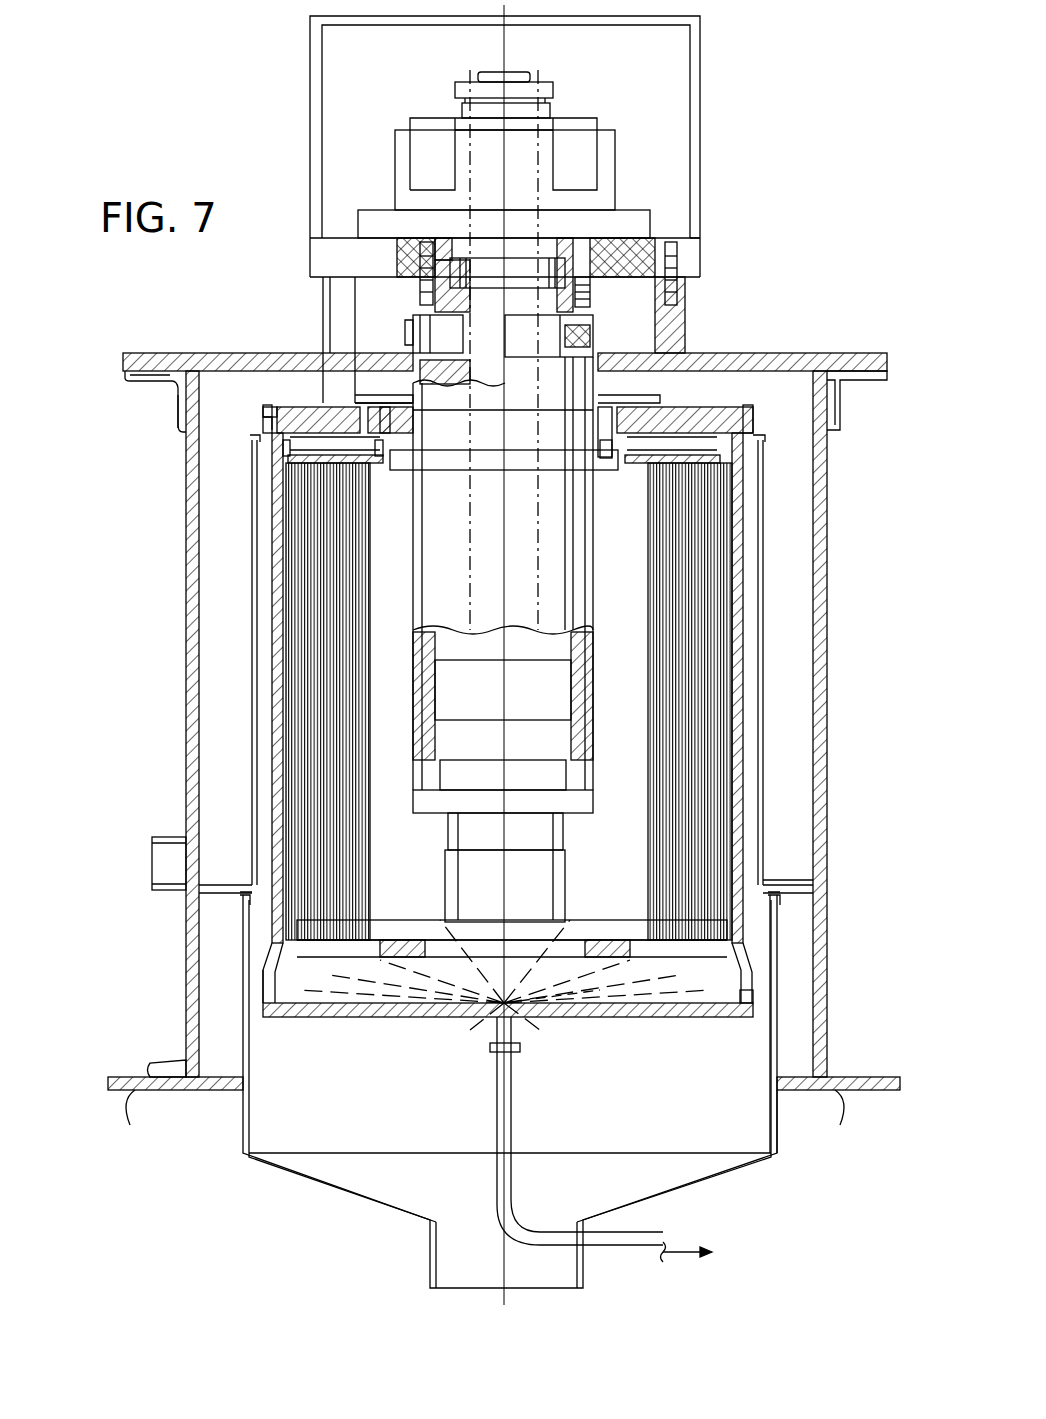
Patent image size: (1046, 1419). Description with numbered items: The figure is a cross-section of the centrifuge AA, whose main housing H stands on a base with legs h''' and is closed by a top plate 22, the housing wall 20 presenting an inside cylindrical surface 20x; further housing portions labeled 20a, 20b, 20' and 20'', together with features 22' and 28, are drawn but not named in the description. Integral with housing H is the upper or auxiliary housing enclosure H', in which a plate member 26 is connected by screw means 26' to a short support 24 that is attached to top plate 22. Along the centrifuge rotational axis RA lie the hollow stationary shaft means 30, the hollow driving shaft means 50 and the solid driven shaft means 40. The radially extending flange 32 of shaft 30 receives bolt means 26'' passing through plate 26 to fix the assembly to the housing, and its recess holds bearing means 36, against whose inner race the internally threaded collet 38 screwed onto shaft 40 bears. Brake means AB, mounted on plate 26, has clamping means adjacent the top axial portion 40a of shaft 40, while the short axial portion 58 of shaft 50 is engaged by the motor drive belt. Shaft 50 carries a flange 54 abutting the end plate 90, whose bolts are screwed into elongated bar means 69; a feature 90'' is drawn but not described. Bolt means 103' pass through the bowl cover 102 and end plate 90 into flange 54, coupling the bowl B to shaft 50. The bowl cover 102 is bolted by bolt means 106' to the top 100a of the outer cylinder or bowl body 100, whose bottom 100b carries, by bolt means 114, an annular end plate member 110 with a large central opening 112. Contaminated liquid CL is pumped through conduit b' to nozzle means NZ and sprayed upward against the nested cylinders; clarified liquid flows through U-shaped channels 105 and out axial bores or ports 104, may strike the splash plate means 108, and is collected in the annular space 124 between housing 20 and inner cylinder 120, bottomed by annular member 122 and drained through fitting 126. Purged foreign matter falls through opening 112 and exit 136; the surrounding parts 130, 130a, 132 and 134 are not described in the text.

The housing 20 is at (461, 724).
The inside cylindrical surface 20x is at (215, 353).
The tank flange lip 20b is at (172, 395).
The tank top flange right 20'' is at (866, 400).
The tank bottom flange 20a is at (150, 1077).
The tank bottom wall portion 20' is at (237, 1062).
The top plate 22 is at (505, 339).
The cover plate opening 22' is at (430, 354).
The short support 24 is at (323, 304).
The plate member 26 is at (386, 236).
The screw means 26' is at (724, 214).
The bolt means 26'' is at (504, 225).
The housing flange right 28 is at (662, 238).
The hollow stationary shaft means 30 is at (497, 312).
The radially extending flange 32 is at (590, 298).
The bearing means 36 is at (548, 258).
The internally threaded collet 38 is at (468, 260).
The solid driven shaft means 40 is at (445, 838).
The top axial portion 40a is at (485, 72).
The hollow driving shaft means 50 is at (410, 674).
The flange 54 is at (445, 472).
The short axial portion 58 is at (593, 338).
The elongated bar means 69 is at (618, 472).
The end plate 90 is at (344, 483).
The disc support plate 90'' is at (459, 462).
The outer cylinder or bowl body 100 is at (743, 547).
The top of bowl body 100a is at (755, 467).
The bottom of bowl body 100b is at (752, 972).
The bowl cover 102 is at (690, 407).
The bolt means 103' is at (643, 390).
The axial bores or ports 104 is at (350, 407).
The U-shaped channels 105 is at (322, 433).
The bolt means 106' is at (237, 421).
The liquid splash plate means 108 is at (395, 395).
The annular end plate member 110 is at (320, 1017).
The central opening 112 is at (400, 1017).
The bolt means 114 is at (745, 1017).
The inner cylinder 120 is at (763, 602).
The annular member 122 is at (790, 885).
The annular space 124 is at (252, 758).
The drain fitting 126 is at (170, 837).
The hopper 130 is at (322, 1219).
The hopper wall 130a is at (780, 1127).
The hopper side wall 132 is at (827, 1007).
The hopper cone 134 is at (400, 1212).
The exit 136 is at (430, 1260).
The brake means AB is at (608, 105).
The bowl B is at (272, 614).
The contaminated liquid CL is at (620, 987).
The nozzle means NZ is at (515, 1032).
The centrifuge rotational axis RA is at (511, 1110).
The housing H is at (888, 679).
The upper or auxiliary housing enclosure H' is at (764, 147).
The centrifuge AA is at (862, 251).
The legs h''' is at (527, 1125).
The conduit b' is at (736, 1238).